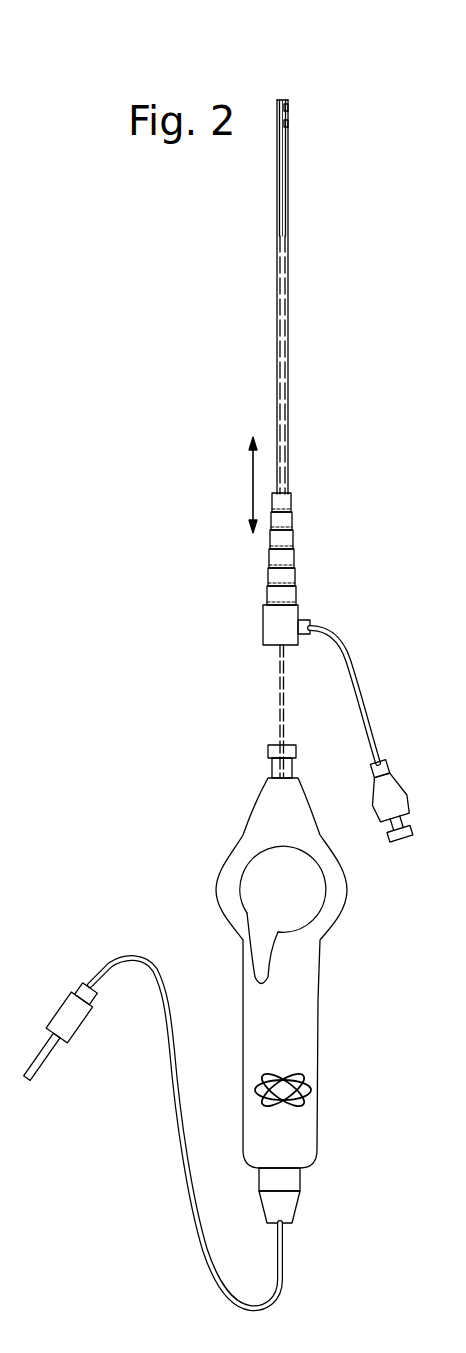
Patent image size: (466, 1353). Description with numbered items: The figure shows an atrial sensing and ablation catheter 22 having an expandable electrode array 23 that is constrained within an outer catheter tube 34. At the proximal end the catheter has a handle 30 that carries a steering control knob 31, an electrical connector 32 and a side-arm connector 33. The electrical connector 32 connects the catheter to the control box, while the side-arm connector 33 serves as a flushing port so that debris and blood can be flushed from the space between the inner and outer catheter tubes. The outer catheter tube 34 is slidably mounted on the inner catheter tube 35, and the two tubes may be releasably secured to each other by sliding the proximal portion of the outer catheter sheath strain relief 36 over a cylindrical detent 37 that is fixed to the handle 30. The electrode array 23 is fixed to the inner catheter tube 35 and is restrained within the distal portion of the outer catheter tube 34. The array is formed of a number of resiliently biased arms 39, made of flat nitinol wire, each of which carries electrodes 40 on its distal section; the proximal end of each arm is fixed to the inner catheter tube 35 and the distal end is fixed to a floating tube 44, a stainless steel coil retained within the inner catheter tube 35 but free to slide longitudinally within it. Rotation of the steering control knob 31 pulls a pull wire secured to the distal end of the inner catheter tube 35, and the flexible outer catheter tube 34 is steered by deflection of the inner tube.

The atrial sensing and ablation catheter 22 is at (336, 434).
The electrode array 23 is at (282, 99).
The handle 30 is at (318, 1017).
The steering control knob 31 is at (322, 900).
The electrical connector 32 is at (85, 1040).
The side-arm connector 33 is at (361, 697).
The outer catheter tube 34 is at (292, 316).
The inner catheter tube 35 is at (284, 346).
The outer catheter sheath strain relief 36 is at (268, 603).
The cylindrical detent 37 is at (268, 755).
The resiliently biased arms 39 is at (287, 166).
The electrodes 40 is at (288, 109).
The floating tube 44 is at (287, 197).